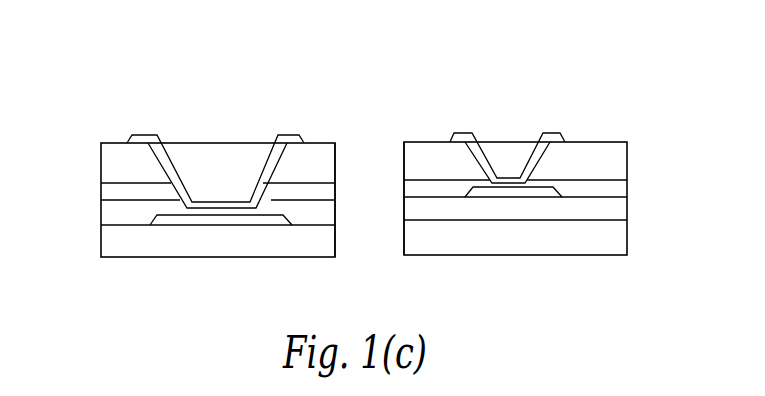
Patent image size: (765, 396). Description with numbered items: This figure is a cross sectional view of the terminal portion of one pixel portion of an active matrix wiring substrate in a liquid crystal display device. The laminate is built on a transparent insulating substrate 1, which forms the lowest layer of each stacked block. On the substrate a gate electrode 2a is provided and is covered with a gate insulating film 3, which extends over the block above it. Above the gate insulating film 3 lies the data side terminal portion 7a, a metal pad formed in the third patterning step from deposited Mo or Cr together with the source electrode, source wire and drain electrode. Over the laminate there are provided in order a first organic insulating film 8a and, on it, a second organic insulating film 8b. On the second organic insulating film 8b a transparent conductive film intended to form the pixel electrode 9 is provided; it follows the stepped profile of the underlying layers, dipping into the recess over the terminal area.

The transparent insulating substrate 1 is at (413, 245).
The gate electrode 2a is at (152, 223).
The gate insulating film 3 is at (403, 212).
The data side terminal portion 7a is at (562, 193).
The first organic insulating film 8a is at (327, 183).
The second organic insulating film 8b is at (337, 162).
The pixel electrode 9 is at (447, 138).